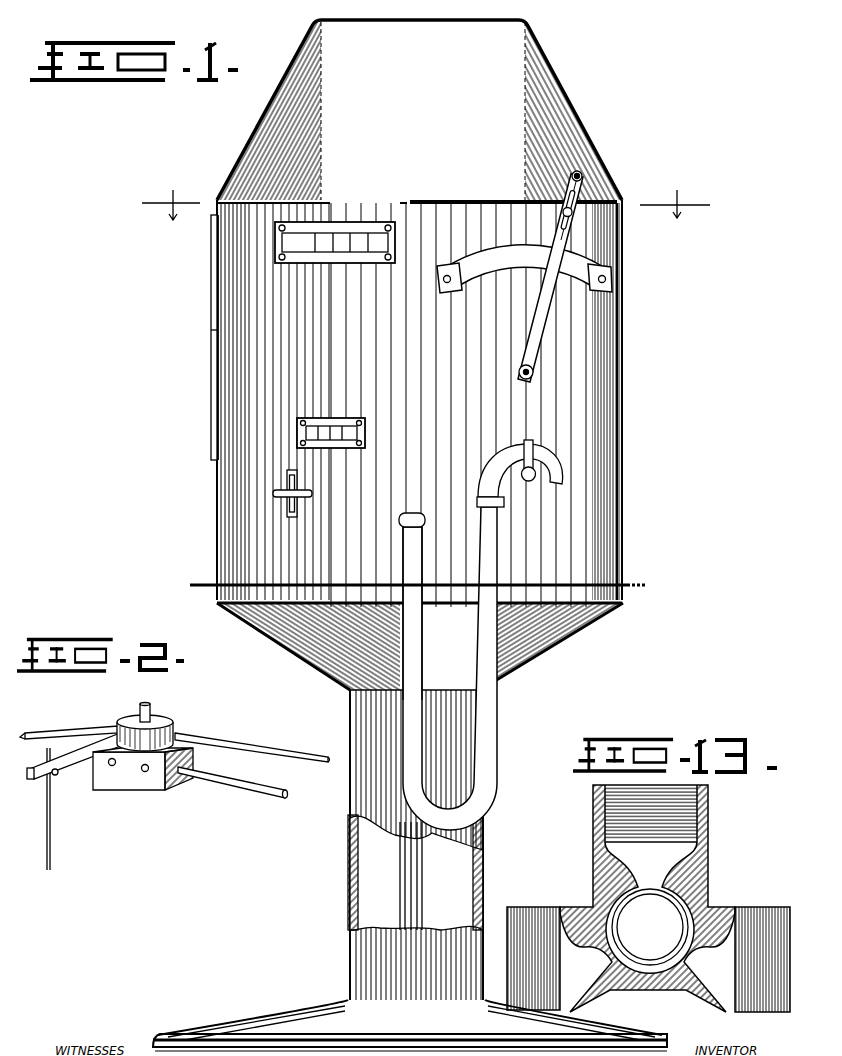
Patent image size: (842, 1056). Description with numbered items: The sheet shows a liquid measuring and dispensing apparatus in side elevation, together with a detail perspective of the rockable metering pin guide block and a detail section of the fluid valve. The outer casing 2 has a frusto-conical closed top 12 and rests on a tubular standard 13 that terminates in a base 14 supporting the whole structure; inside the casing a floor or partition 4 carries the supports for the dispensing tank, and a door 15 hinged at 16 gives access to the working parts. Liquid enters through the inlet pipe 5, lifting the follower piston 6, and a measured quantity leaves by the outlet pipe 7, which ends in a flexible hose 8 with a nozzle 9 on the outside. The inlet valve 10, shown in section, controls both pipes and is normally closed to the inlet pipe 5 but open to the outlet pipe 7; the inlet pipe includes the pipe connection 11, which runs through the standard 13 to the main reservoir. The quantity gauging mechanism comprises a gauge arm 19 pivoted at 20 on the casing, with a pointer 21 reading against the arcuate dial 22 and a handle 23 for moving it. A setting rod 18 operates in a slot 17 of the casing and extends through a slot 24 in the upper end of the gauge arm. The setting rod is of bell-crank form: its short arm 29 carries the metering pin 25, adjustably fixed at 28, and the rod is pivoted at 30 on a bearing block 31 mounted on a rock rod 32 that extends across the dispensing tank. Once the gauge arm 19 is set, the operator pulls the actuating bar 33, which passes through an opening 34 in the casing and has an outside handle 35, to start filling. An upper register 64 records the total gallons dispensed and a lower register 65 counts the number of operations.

In FIG. 1, the upper casing 2 is at (612, 440).
In FIG. 1, the floor or partition 4 is at (646, 588).
In FIG. 13, the inlet pipe 5 is at (533, 958).
In FIG. 1, the follower piston 6 is at (426, 201).
In FIG. 1, the outlet pipe 7 is at (398, 529).
In FIG. 13, the outlet pipe 7 is at (762, 959).
In FIG. 1, the flexible hose 8 is at (486, 733).
In FIG. 1, the nozzle 9 is at (560, 467).
In FIG. 13, the inlet valve 10 is at (657, 984).
In FIG. 1, the pipe connection 11 is at (423, 876).
In FIG. 1, the frusto-conical closed top 12 is at (557, 117).
In FIG. 1, the tubular standard 13 is at (466, 906).
In FIG. 1, the base 14 is at (237, 1023).
In FIG. 1, the door 15 is at (233, 474).
In FIG. 1, the hinge 16 is at (211, 455).
In FIG. 1, the slot 17 is at (458, 202).
In FIG. 1, the setting rod 18 is at (578, 207).
In FIG. 2, the setting rod 18 is at (257, 747).
In FIG. 1, the gauge arm 19 is at (540, 327).
In FIG. 1, the pivot 20 is at (533, 372).
In FIG. 1, the pointer 21 is at (595, 256).
In FIG. 1, the arcuate dial 22 is at (614, 280).
In FIG. 1, the handle 23 is at (578, 174).
In FIG. 1, the slot 24 is at (600, 205).
In FIG. 2, the metering pin 25 is at (51, 839).
In FIG. 2, the adjustable fixing 28 is at (59, 775).
In FIG. 2, the short arm 29 is at (90, 747).
In FIG. 2, the pivot 30 is at (137, 712).
In FIG. 2, the bearing block 31 is at (133, 778).
In FIG. 2, the rock rod 32 is at (240, 783).
In FIG. 1, the actuating bar 33 is at (291, 483).
In FIG. 1, the opening 34 is at (297, 490).
In FIG. 1, the handle 35 is at (312, 496).
In FIG. 1, the upper register 64 is at (360, 254).
In FIG. 1, the lower register 65 is at (366, 435).